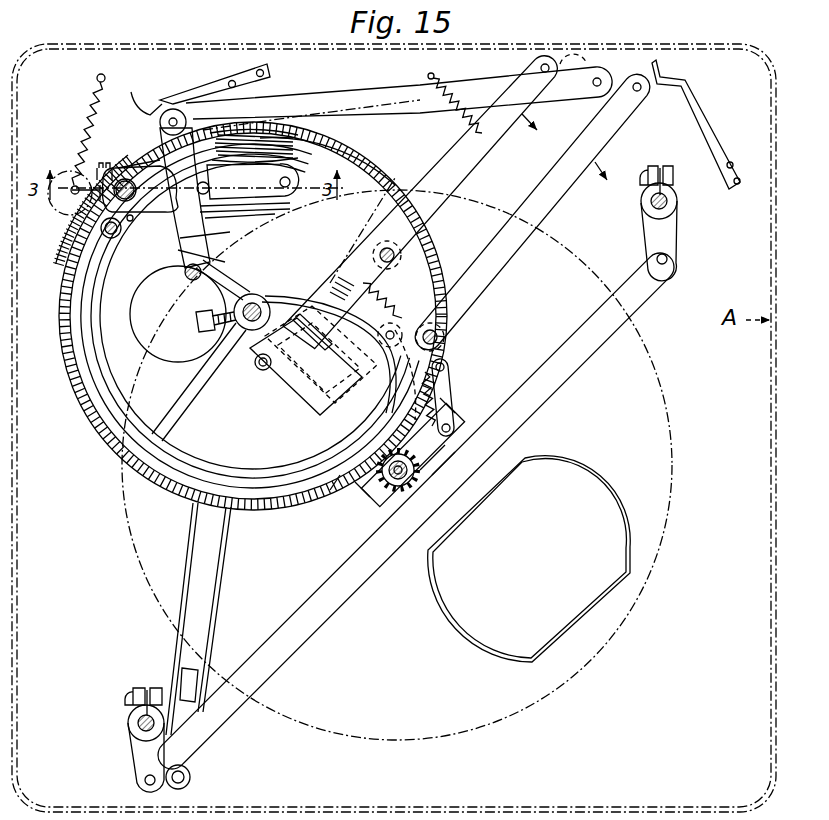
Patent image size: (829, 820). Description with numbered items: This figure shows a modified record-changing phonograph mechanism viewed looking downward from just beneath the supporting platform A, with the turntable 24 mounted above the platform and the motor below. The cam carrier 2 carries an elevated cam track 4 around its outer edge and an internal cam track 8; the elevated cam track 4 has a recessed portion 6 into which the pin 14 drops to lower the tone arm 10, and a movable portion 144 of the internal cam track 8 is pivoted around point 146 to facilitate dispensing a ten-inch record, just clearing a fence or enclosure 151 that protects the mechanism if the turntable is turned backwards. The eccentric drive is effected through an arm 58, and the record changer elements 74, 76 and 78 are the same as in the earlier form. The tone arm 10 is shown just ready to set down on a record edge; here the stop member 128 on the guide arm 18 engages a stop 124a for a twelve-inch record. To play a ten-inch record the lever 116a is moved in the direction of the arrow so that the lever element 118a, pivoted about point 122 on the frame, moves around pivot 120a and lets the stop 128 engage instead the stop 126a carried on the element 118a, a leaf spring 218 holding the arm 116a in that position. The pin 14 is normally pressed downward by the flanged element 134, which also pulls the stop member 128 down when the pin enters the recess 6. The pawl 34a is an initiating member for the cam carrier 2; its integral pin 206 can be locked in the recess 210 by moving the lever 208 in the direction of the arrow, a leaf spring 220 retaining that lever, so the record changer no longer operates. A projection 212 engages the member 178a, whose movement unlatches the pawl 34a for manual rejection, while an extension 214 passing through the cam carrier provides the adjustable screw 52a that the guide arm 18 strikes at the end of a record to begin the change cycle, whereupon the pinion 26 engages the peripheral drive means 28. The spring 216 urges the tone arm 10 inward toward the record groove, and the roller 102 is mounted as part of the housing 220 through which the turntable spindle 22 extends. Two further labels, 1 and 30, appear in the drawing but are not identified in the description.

The housing opening 1 is at (628, 440).
The cam carrier 2 is at (274, 350).
The elevated cam track 4 is at (93, 405).
The recessed portion 6 is at (138, 166).
The internal cam track 8 is at (113, 423).
The tone arm 10 is at (398, 178).
The pin 14 is at (100, 200).
The guide arm 18 is at (137, 190).
The turntable spindle 22 is at (398, 480).
The turntable 24 is at (645, 336).
The pinion 26 is at (413, 474).
The peripheral drive means 28 is at (331, 490).
The bracket 30 is at (368, 498).
The pawl 34a is at (440, 366).
The adjustable screw 52a is at (210, 332).
The arm 58 is at (224, 592).
The record changer element 74 is at (314, 629).
The record changer element 76 is at (679, 235).
The record changer element 78 is at (130, 765).
The roller 102 is at (450, 378).
The lever 116a is at (485, 72).
The lever element 118a is at (226, 262).
The pivot 120a is at (182, 116).
The pivot point 122 is at (190, 276).
The stop 124a is at (218, 200).
The stop 126a is at (232, 236).
The stop member 128 is at (208, 185).
The flanged element 134 is at (272, 206).
The movable track portion 144 is at (218, 214).
The pivot point 146 is at (70, 252).
The fence 151 is at (328, 152).
The member 178a is at (496, 153).
The pin 206 is at (345, 400).
The lever 208 is at (600, 152).
The recess 210 is at (446, 350).
The projection 212 is at (313, 340).
The extension 214 is at (198, 320).
The spring 216 is at (90, 130).
The leaf spring 218 is at (170, 98).
The leaf spring 220 is at (696, 92).